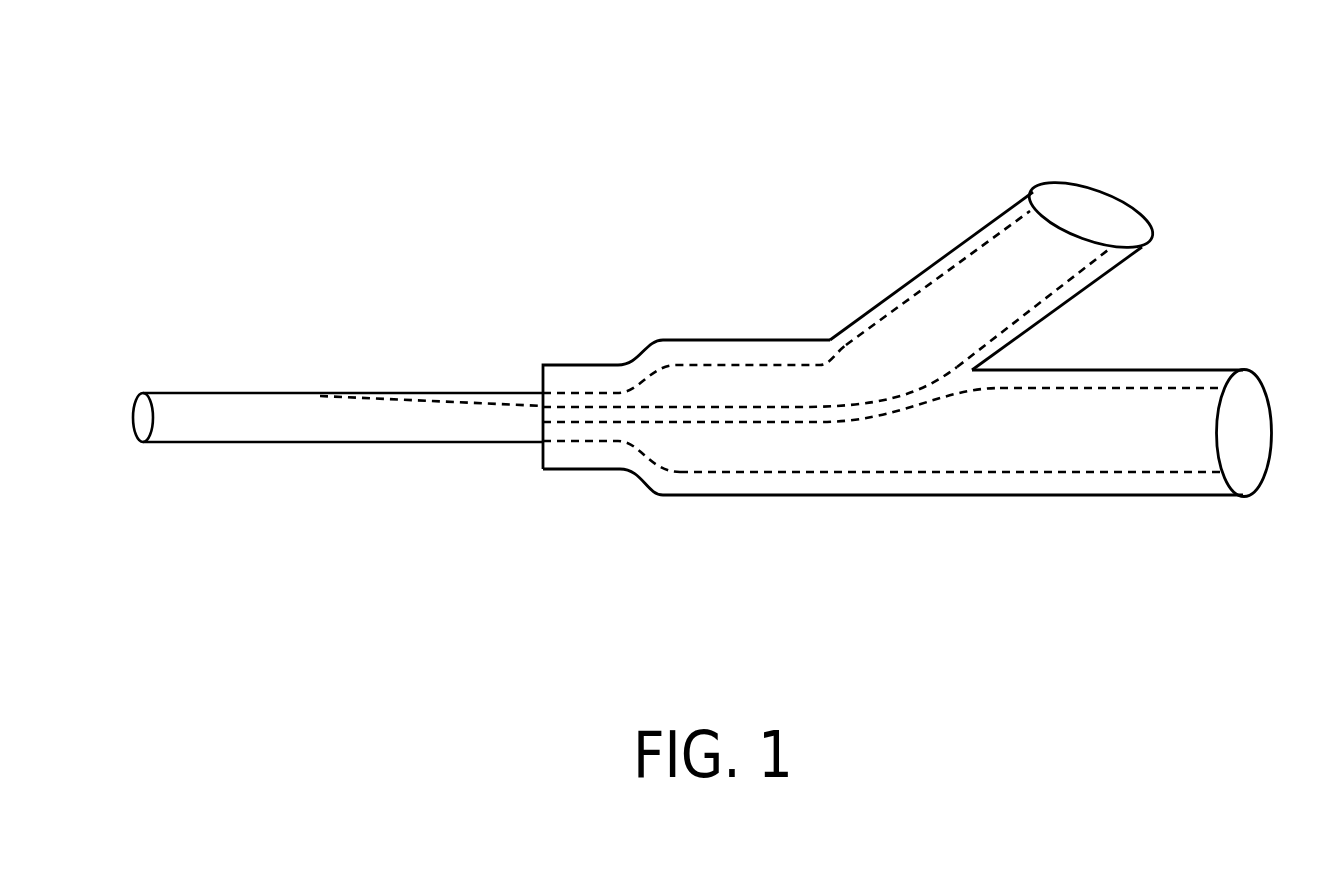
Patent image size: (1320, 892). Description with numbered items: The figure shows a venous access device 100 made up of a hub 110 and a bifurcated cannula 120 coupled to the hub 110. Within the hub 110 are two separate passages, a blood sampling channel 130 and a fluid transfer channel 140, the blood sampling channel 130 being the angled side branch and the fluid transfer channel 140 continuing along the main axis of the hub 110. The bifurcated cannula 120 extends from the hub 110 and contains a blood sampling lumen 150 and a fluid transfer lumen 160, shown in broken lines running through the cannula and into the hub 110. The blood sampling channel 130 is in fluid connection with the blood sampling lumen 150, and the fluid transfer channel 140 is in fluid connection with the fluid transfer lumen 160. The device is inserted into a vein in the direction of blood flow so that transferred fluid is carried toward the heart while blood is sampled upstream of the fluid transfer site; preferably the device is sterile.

The venous access device 100 is at (372, 170).
The hub 110 is at (1238, 537).
The bifurcated cannula 120 is at (539, 452).
The blood sampling channel 130 is at (1037, 257).
The fluid transfer channel 140 is at (1178, 410).
The blood sampling lumen 150 is at (432, 400).
The fluid transfer lumen 160 is at (220, 407).